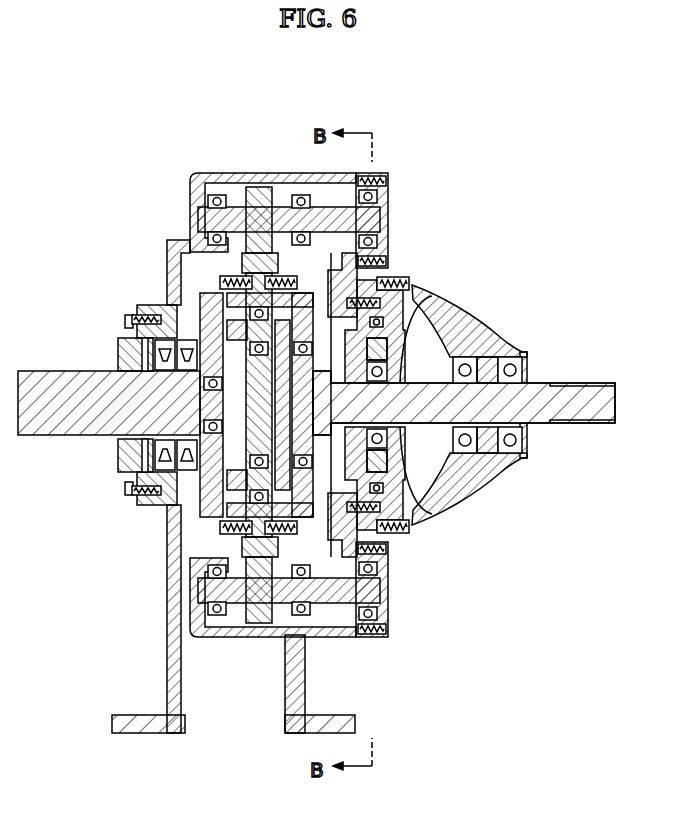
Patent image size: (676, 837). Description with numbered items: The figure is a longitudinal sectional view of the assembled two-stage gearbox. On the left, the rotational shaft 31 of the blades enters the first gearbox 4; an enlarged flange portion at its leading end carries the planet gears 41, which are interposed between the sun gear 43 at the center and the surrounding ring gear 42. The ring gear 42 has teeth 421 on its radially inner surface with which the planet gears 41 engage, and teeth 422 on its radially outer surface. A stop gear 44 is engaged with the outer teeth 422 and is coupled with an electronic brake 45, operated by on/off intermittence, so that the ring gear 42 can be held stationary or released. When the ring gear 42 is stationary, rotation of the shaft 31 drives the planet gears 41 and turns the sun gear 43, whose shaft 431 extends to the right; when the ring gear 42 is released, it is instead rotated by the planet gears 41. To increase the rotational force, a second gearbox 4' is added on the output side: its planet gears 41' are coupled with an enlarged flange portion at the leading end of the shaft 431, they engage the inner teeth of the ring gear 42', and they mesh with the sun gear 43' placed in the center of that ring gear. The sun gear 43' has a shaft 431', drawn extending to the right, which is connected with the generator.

The rotational shaft 31 is at (59, 378).
The gearbox 4 is at (232, 619).
The second gearbox 4' is at (425, 405).
The planet gears 41 is at (213, 363).
The planet gears 41' is at (447, 402).
The ring gear 42 is at (253, 394).
The ring gear 42' is at (443, 438).
The sun gear 43 is at (142, 370).
The sun gear 43' is at (463, 420).
The stop gear 44 is at (245, 190).
The electronic brake 45 is at (386, 238).
The teeth 421 is at (410, 284).
The teeth 422 is at (389, 218).
The shaft 431 is at (409, 553).
The shaft 431' is at (464, 388).